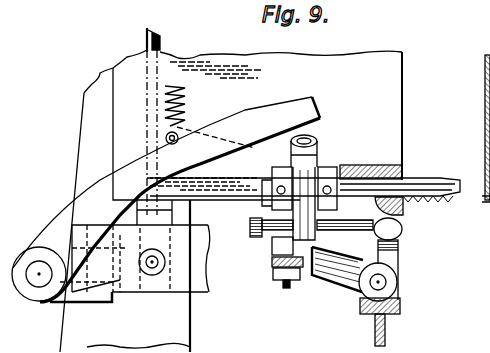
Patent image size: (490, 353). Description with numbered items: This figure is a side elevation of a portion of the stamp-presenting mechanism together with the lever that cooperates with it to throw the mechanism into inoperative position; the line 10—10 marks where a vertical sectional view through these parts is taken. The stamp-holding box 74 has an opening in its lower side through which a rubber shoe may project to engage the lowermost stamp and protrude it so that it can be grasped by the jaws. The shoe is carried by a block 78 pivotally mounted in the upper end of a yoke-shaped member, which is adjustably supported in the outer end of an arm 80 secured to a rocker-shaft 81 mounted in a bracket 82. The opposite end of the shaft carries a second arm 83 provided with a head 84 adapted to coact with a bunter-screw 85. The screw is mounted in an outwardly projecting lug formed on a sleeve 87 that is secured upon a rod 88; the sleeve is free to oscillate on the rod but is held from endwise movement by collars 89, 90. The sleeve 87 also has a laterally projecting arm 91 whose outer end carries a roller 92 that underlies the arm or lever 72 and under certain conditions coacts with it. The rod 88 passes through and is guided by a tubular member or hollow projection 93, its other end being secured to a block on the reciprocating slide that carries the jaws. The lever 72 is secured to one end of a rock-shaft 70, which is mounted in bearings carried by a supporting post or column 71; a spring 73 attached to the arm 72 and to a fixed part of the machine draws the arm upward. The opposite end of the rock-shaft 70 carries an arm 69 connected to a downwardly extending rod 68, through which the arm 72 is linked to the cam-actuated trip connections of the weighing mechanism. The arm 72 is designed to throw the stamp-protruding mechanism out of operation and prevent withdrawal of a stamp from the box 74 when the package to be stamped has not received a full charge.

The section line 10 is at (287, 140).
The rod 68 is at (146, 44).
The arm 69 is at (128, 278).
The rock-shaft 70 is at (37, 284).
The supporting post or column 71 is at (182, 335).
The arm 72 is at (240, 112).
The spring 73 is at (180, 108).
The stamp-holding box 74 is at (392, 83).
The block 78 is at (253, 222).
The arm 80 is at (345, 280).
The rocker-shaft 81 is at (430, 282).
The bracket 82 is at (395, 310).
The second arm 83 is at (390, 262).
The head 84 is at (402, 230).
The bunter-screw 85 is at (272, 237).
The sleeve 87 is at (262, 222).
The rod 88 is at (430, 178).
The collar 89 is at (330, 170).
The collar 90 is at (272, 170).
The laterally-projecting arm 91 is at (308, 173).
The roller 92 is at (317, 140).
The tubular member or hollow projection 93 is at (380, 163).